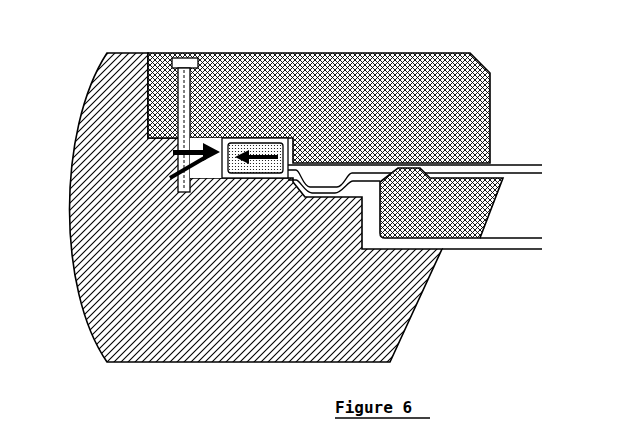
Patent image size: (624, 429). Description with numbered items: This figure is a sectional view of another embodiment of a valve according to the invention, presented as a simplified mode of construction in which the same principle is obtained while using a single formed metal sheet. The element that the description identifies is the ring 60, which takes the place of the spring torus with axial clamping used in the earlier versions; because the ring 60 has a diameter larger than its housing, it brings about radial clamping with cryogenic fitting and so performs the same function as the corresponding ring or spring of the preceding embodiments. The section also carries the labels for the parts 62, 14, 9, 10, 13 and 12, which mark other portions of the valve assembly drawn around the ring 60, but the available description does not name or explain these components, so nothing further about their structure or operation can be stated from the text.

The ring 60 is at (257, 203).
The crosshatched insert block 62 is at (388, 87).
The seal member 14 is at (350, 86).
The sensor box 9 is at (290, 170).
The trough / diaphragm 10 is at (328, 178).
The thin plate 13 is at (405, 165).
The clamping part 12 is at (476, 192).